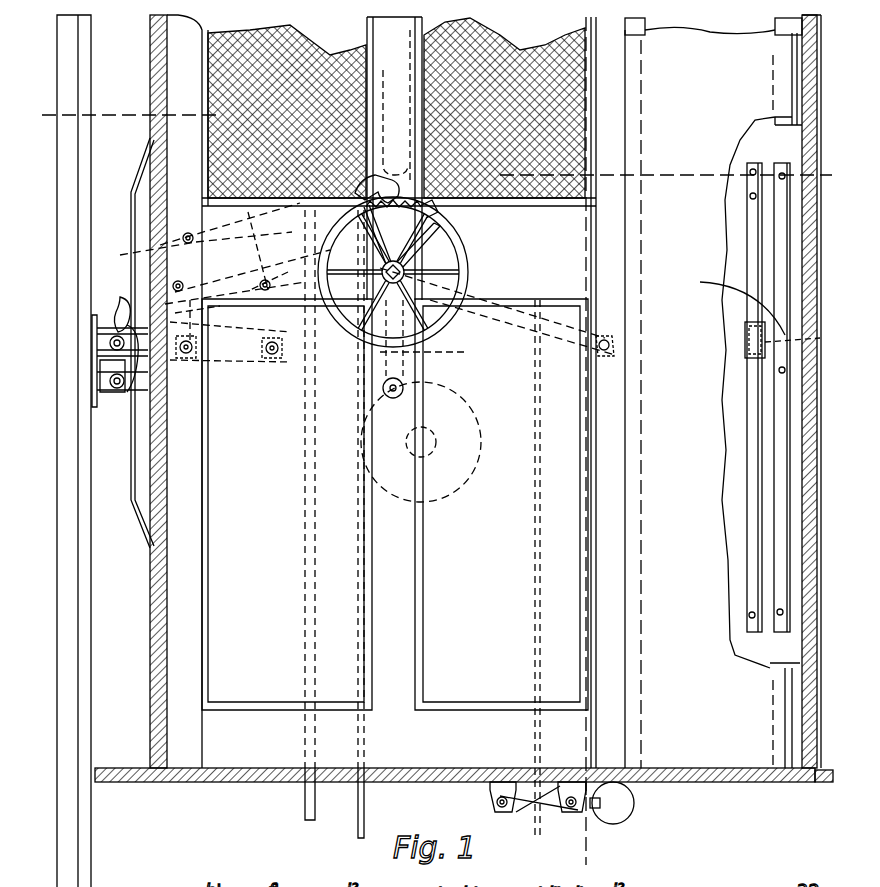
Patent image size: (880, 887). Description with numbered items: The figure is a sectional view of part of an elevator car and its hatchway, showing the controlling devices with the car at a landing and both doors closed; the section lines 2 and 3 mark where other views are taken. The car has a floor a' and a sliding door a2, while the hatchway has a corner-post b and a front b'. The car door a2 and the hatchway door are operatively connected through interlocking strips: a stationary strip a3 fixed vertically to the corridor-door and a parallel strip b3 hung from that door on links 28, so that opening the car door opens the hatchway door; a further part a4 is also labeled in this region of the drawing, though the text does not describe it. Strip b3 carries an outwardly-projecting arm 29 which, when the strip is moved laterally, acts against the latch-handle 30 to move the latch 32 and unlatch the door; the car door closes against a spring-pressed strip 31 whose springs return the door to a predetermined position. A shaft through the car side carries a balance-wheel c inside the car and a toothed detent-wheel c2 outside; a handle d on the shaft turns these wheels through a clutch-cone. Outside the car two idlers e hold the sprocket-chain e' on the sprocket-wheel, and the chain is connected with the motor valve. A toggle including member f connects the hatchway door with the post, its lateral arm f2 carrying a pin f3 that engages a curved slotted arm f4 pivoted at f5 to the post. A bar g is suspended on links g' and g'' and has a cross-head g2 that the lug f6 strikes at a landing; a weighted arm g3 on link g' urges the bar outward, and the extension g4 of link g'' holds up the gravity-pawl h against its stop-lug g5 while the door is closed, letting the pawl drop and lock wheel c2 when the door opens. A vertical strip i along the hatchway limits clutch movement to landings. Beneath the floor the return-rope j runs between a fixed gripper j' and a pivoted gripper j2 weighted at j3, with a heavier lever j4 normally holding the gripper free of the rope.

The section line 2 2 is at (430, 141).
The section line 3 3 is at (581, 443).
The links 28 is at (748, 186).
The outwardly-projecting arm 29 is at (745, 326).
The latch-handle 30 is at (765, 345).
The strip 31 is at (780, 784).
The latch 32 is at (746, 306).
The floor of the car a' is at (455, 759).
The sliding door of the car a2 is at (713, 393).
The stationary strip a3 is at (774, 427).
The bracket a4 is at (792, 40).
The corner-post of the hatchway b is at (59, 451).
The front of the hatchway b' is at (151, 391).
The strip b3 is at (755, 457).
The balance-wheel c is at (456, 243).
The toothed detent-wheel c2 is at (421, 212).
The handle d is at (386, 368).
The idlers e is at (431, 259).
The sprocket-chain e' is at (418, 524).
The toggle member f is at (480, 274).
The lateral arm f2 is at (97, 350).
The pin f3 is at (97, 375).
The curved slotted arm f4 is at (120, 298).
The pivot f5 is at (117, 392).
The lug f6 is at (96, 330).
The bar g is at (230, 346).
The link g' is at (230, 307).
The link g'' is at (283, 333).
The elongated cross-head g2 is at (131, 214).
The weighted arm g3 is at (230, 231).
The extension of link g4 is at (266, 251).
The stop-lug g5 is at (247, 260).
The gravity-pawl h is at (360, 170).
The vertical strip i is at (300, 408).
The return-rope j is at (534, 829).
The cam-shaped gripper j' is at (538, 816).
The cam-shaped gripper j2 is at (547, 570).
The weight j3 is at (622, 804).
The lever j4 is at (574, 820).